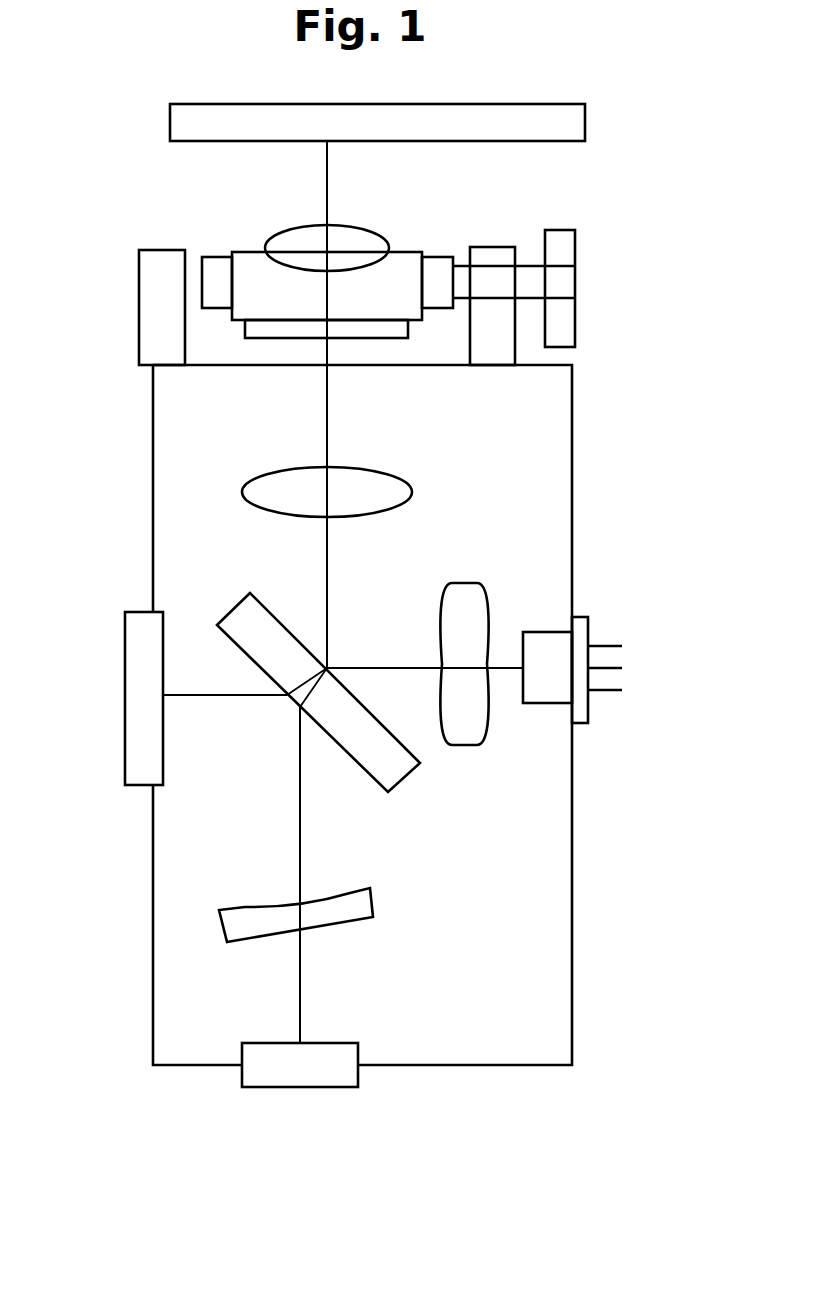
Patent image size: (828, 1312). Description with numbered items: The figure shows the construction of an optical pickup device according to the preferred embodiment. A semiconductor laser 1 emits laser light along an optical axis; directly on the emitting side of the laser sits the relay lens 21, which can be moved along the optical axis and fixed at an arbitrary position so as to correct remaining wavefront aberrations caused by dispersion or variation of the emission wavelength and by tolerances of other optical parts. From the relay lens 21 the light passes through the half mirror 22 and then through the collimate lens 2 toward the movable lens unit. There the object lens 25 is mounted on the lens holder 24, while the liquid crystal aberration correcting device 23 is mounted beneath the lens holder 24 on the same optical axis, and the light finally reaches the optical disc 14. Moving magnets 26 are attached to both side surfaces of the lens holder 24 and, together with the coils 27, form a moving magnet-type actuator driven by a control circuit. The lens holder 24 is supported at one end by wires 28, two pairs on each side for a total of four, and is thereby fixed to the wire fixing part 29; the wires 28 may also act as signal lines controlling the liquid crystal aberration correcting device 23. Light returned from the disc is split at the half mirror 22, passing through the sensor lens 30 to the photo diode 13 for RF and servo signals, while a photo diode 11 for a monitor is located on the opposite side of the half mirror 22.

The semiconductor laser 1 is at (545, 632).
The collimate lens 2 is at (412, 492).
The photo diode for a monitor 11 is at (125, 740).
The photo diode for RF and servo 13 is at (320, 1087).
The optical disc 14 is at (585, 122).
The relay lens 21 is at (462, 583).
The half mirror 22 is at (400, 784).
The liquid crystal aberration correcting device 23 is at (260, 338).
The lens holder 24 is at (360, 308).
The object lens 25 is at (375, 228).
The moving magnets 26 is at (222, 257).
The coils 27 is at (160, 250).
The wires 28 is at (531, 297).
The wire fixing part 29 is at (575, 318).
The sensor lens 30 is at (373, 893).